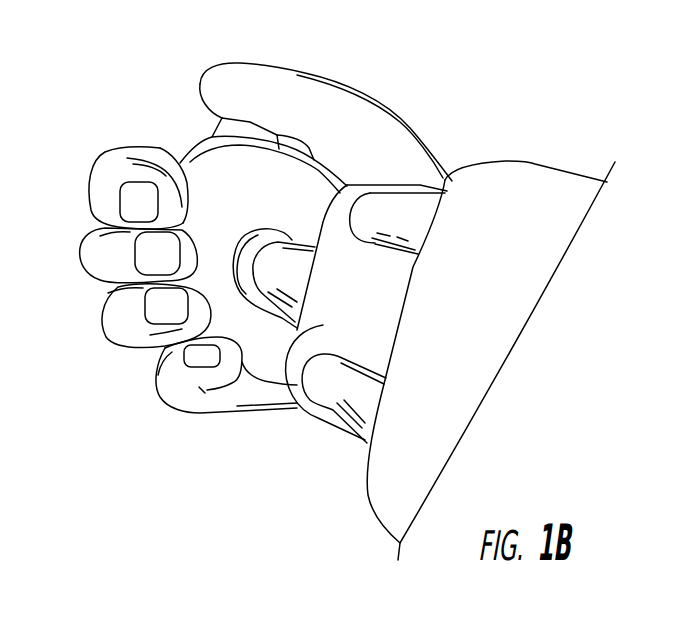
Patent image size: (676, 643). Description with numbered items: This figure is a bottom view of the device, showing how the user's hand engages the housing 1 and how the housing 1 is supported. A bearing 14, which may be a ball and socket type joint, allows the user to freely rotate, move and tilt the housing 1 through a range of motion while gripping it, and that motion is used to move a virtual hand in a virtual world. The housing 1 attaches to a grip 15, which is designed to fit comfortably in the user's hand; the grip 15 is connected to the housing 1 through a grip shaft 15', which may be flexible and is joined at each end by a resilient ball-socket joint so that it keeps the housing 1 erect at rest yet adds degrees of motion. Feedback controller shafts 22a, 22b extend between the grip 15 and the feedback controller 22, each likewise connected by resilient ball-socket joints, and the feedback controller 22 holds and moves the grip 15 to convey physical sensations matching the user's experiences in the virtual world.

The housing 1 is at (285, 167).
The bearing 14 is at (245, 232).
The grip 15 is at (274, 321).
The grip shaft 15' is at (180, 309).
The feedback controller 22 is at (513, 184).
The feedback controller shaft 22a is at (331, 396).
The feedback controller shaft 22b is at (390, 213).